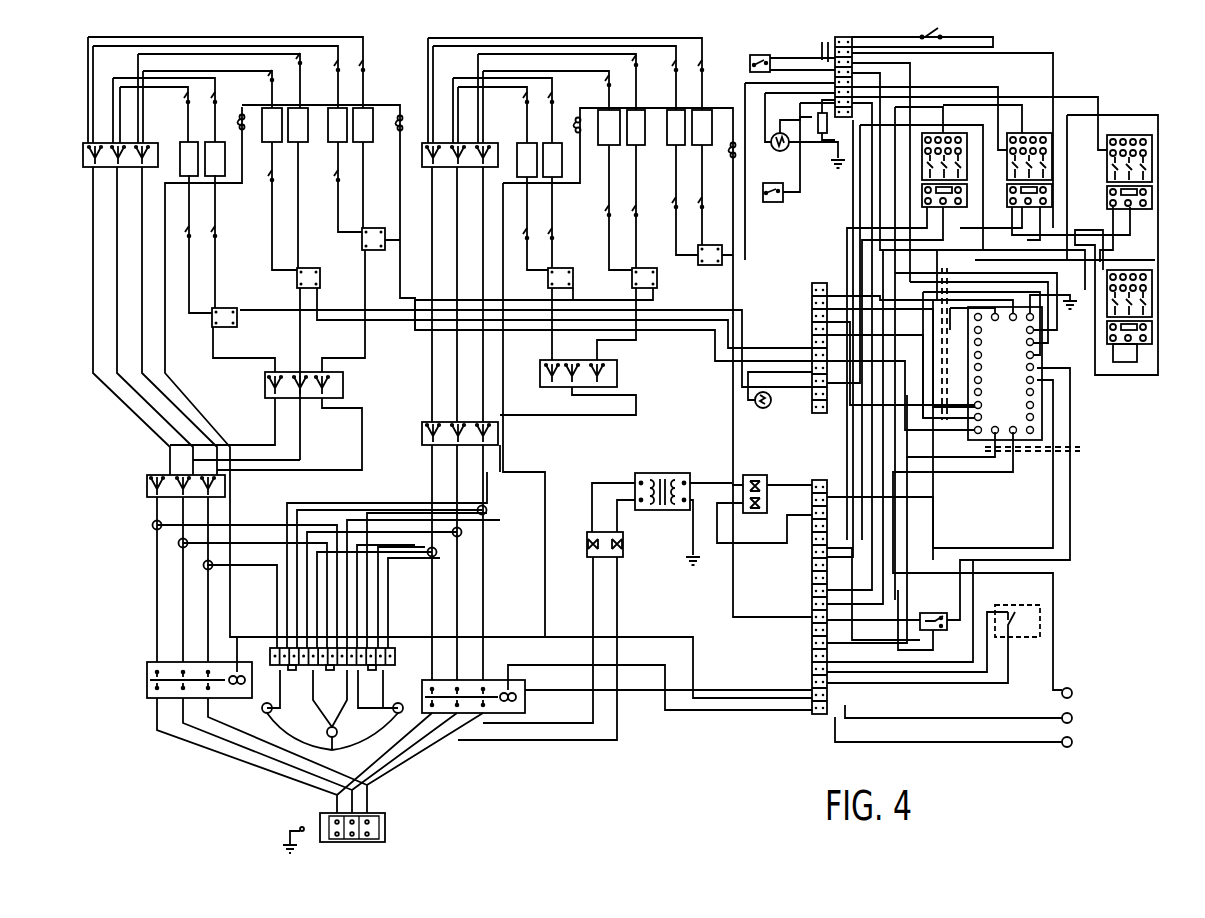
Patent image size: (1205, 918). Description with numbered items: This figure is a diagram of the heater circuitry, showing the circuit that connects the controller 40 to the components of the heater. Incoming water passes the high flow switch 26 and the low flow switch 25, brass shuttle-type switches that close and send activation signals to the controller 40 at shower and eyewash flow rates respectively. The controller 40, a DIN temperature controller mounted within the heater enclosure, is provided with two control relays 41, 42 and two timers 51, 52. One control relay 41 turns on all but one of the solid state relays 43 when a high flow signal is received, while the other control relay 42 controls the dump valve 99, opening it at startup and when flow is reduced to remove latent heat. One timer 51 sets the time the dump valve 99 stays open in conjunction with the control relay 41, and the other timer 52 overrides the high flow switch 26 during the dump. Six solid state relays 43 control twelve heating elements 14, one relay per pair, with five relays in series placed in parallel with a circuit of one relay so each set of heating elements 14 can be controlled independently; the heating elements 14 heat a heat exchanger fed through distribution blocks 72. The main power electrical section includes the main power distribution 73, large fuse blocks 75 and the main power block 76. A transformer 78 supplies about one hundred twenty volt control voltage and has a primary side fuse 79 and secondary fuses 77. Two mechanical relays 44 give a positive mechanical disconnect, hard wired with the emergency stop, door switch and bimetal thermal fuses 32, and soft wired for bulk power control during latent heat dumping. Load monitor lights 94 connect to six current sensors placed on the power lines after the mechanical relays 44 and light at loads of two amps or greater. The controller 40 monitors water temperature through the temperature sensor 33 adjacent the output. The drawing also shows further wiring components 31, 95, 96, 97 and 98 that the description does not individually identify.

The heating elements 14 is at (195, 170).
The low flow switch 25 is at (760, 204).
The high flow switch 26 is at (750, 54).
The switch contact 31 is at (220, 98).
The bimetal thermal fuses 32 is at (390, 112).
The temperature sensor 33 is at (770, 405).
The controller 40 is at (1040, 398).
The control relay 41 is at (945, 130).
The control relay 42 is at (1032, 130).
The solid state relays 43 is at (228, 305).
The mechanical relays 44 is at (150, 702).
The timer 51 is at (1115, 133).
The timer 52 is at (1143, 278).
The distribution blocks 72 is at (87, 164).
The main power distribution 73 is at (147, 473).
The large fuse blocks 75 is at (265, 384).
The main power block 76 is at (388, 826).
The secondary fuses 77 is at (748, 515).
The transformer 78 is at (665, 470).
The primary side fuse 79 is at (626, 545).
The load monitor lights 94 is at (332, 722).
The terminal block 95 is at (403, 648).
The terminal block 96 is at (824, 37).
The terminal block 97 is at (820, 280).
The terminal block 98 is at (815, 715).
The dump valve 99 is at (768, 148).